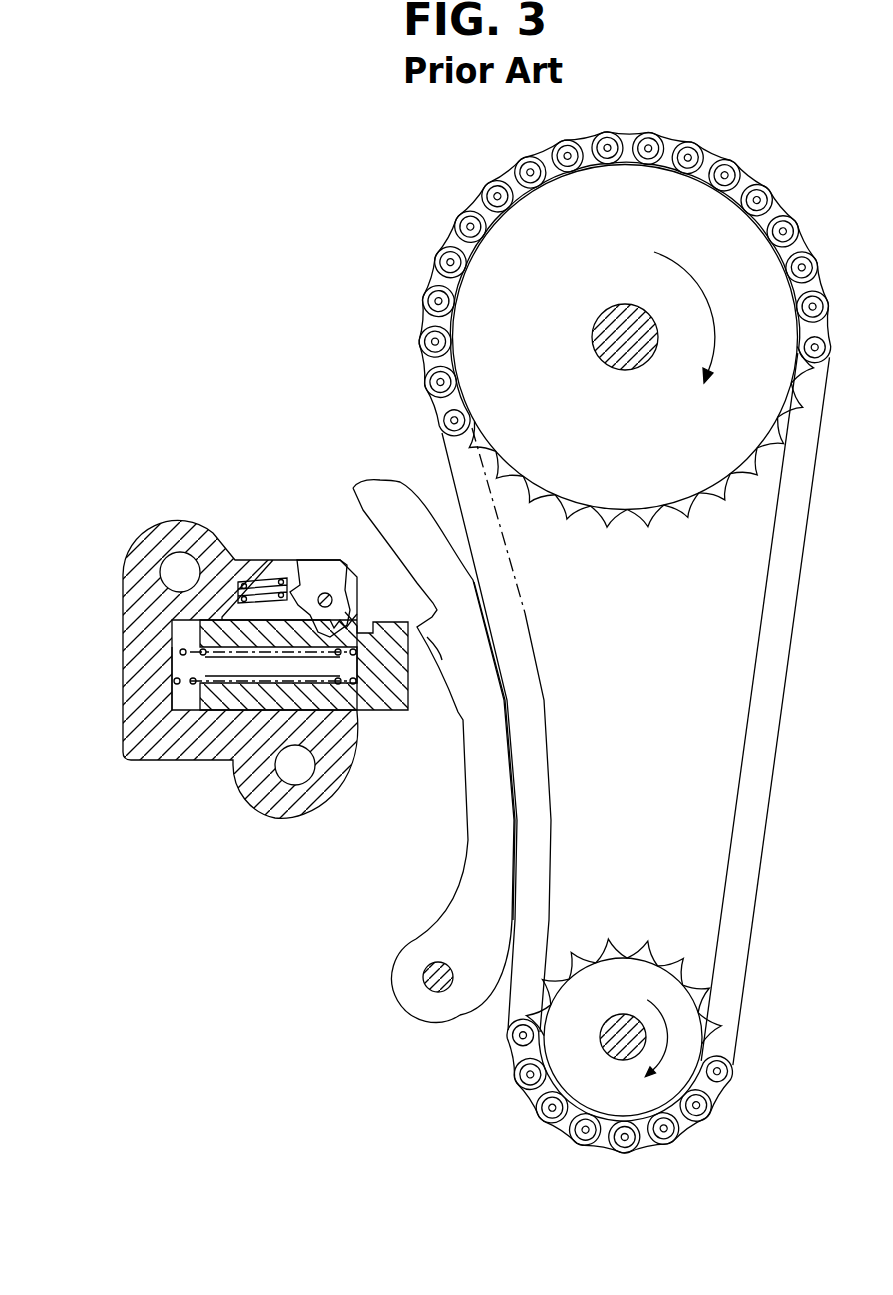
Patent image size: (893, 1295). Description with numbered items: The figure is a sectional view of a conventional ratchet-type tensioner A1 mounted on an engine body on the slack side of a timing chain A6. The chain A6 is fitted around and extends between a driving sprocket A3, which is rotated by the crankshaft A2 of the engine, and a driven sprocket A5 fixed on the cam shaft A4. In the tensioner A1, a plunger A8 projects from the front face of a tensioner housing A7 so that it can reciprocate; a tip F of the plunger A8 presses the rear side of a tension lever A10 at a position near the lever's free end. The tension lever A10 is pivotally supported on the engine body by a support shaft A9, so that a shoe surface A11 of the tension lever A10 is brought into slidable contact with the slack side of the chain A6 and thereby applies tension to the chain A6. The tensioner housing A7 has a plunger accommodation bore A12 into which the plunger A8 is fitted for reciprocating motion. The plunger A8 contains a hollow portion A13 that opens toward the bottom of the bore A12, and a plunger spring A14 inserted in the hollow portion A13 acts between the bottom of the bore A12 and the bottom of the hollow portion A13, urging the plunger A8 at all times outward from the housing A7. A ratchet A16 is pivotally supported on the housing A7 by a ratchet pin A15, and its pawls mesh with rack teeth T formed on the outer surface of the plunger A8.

The ratchet-type tensioner A1 is at (232, 657).
The crankshaft A2 is at (612, 1023).
The driving sprocket A3 is at (638, 967).
The cam shaft A4 is at (607, 323).
The driven sprocket A5 is at (657, 480).
The chain A6 is at (425, 299).
The tensioner housing A7 is at (160, 750).
The plunger A8 is at (397, 712).
The support shaft A9 is at (420, 978).
The tension lever A10 is at (474, 751).
The shoe surface A11 is at (492, 633).
The plunger accommodation bore A12 is at (175, 700).
The hollow portion A13 is at (238, 665).
The plunger spring A14 is at (178, 660).
The ratchet pin A15 is at (350, 567).
The ratchet A16 is at (313, 557).
The rack teeth T is at (352, 614).
The tip of the plunger F is at (441, 665).